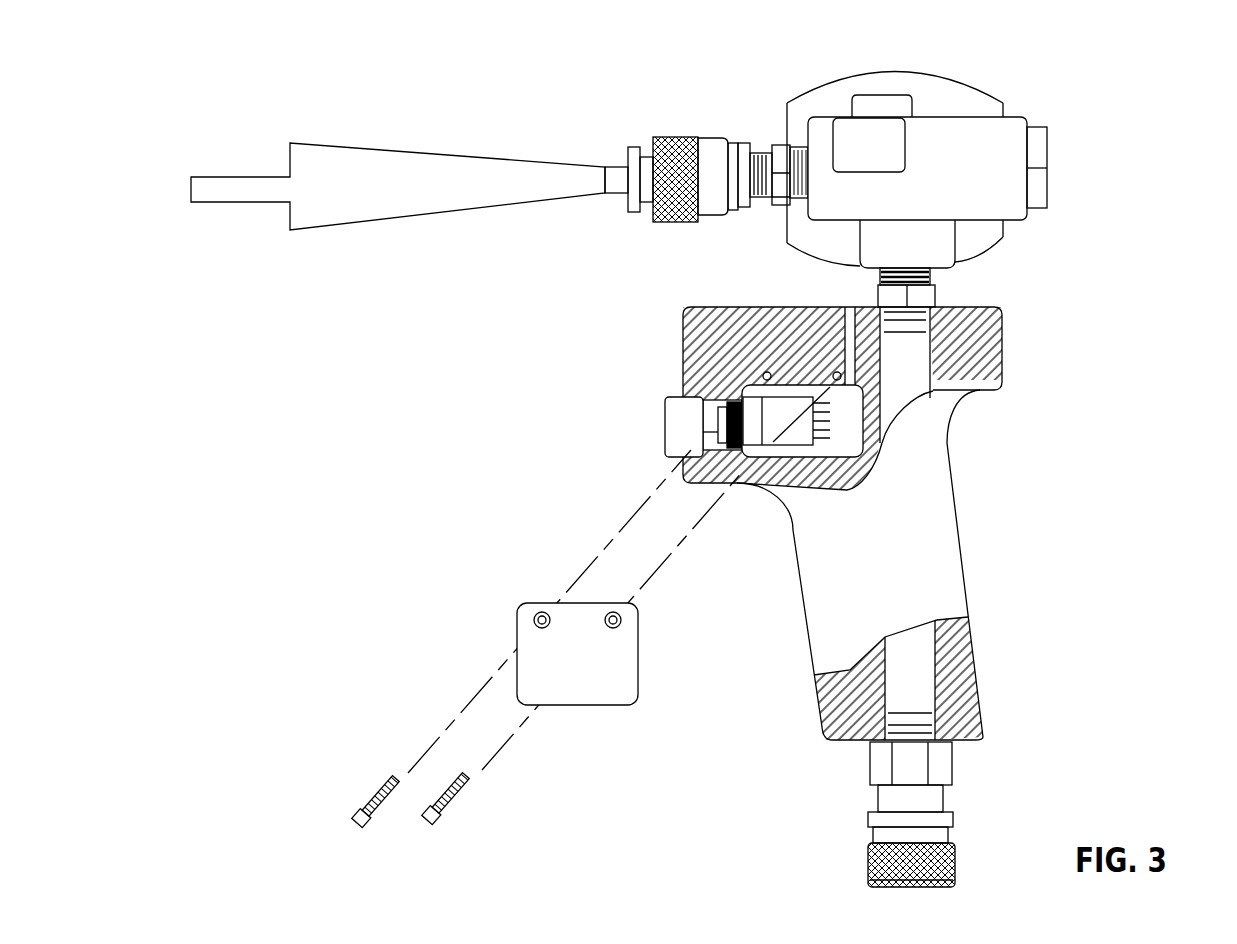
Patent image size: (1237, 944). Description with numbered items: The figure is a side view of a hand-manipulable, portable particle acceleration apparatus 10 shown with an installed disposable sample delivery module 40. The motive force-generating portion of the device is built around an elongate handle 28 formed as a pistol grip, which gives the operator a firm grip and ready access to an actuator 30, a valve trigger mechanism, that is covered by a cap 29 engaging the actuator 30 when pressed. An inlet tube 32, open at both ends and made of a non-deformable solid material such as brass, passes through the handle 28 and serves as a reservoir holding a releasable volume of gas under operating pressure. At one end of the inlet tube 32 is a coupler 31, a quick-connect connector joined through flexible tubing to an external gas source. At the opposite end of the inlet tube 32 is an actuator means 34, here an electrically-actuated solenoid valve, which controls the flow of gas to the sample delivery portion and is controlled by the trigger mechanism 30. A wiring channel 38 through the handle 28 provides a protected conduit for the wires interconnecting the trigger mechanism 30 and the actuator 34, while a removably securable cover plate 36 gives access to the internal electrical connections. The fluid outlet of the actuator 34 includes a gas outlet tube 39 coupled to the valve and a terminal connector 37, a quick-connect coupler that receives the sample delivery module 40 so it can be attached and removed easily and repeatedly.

The particle acceleration apparatus 10 is at (914, 523).
The handle 28 is at (968, 547).
The cap 29 is at (654, 454).
The actuator 30 is at (699, 409).
The coupler 31 is at (861, 862).
The inlet tube 32 is at (943, 684).
The actuator means 34 is at (915, 175).
The cover plate 36 is at (594, 711).
The terminal connector 37 is at (685, 127).
The wiring channel 38 is at (844, 301).
The gas outlet tube 39 is at (797, 146).
The sample delivery module 40 is at (431, 141).